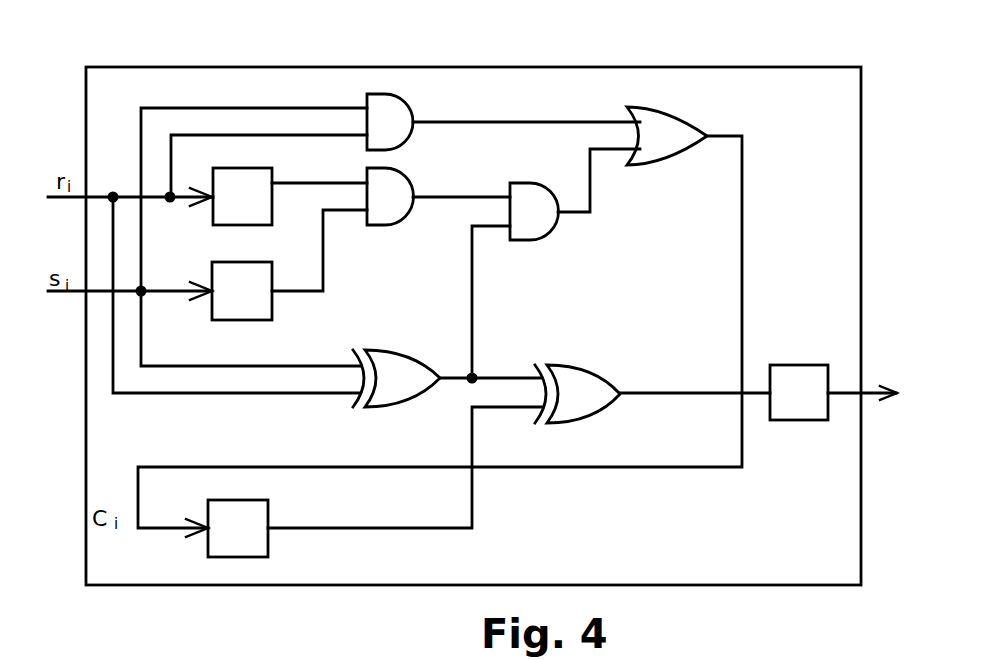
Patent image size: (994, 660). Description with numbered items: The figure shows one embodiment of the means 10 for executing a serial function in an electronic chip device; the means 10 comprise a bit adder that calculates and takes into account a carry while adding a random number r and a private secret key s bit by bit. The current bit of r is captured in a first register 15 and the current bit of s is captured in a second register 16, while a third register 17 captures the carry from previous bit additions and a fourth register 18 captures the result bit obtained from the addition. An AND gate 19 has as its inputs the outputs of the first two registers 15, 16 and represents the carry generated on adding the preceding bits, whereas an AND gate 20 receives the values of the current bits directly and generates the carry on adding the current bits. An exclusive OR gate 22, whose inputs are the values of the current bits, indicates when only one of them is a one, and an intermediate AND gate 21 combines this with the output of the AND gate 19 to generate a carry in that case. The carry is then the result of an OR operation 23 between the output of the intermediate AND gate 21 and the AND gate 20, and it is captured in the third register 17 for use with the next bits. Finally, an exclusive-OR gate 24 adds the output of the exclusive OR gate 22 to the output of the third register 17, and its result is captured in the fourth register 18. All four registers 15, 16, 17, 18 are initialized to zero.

The means for executing a serial function 10 is at (833, 128).
The first register 15 is at (265, 197).
The second register 16 is at (268, 306).
The third register 17 is at (266, 545).
The fourth register 18 is at (802, 378).
The AND gate 19 is at (402, 181).
The AND gate 20 is at (402, 108).
The intermediate AND gate 21 is at (540, 225).
The exclusive OR gate 22 is at (395, 358).
The OR operation 23 is at (670, 150).
The exclusive-OR gate 24 is at (590, 377).